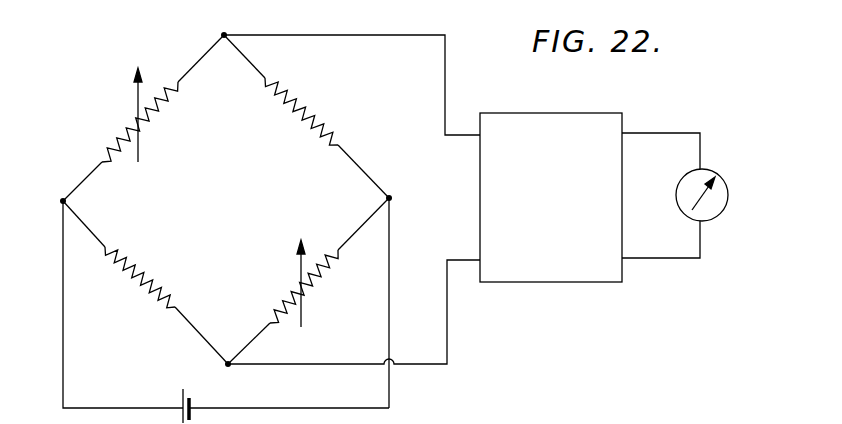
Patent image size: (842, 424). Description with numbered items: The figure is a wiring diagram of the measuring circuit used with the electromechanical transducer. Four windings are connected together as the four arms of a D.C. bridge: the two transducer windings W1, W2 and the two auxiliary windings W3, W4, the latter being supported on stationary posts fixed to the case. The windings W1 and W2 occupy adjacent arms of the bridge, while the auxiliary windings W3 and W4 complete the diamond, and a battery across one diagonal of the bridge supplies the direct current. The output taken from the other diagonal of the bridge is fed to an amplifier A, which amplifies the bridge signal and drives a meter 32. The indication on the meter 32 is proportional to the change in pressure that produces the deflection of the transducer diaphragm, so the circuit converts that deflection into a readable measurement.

The winding W1 is at (112, 138).
The winding W2 is at (327, 273).
The auxiliary winding W3 is at (140, 290).
The auxiliary winding W4 is at (318, 113).
The amplifier A is at (551, 197).
The meter 32 is at (719, 177).